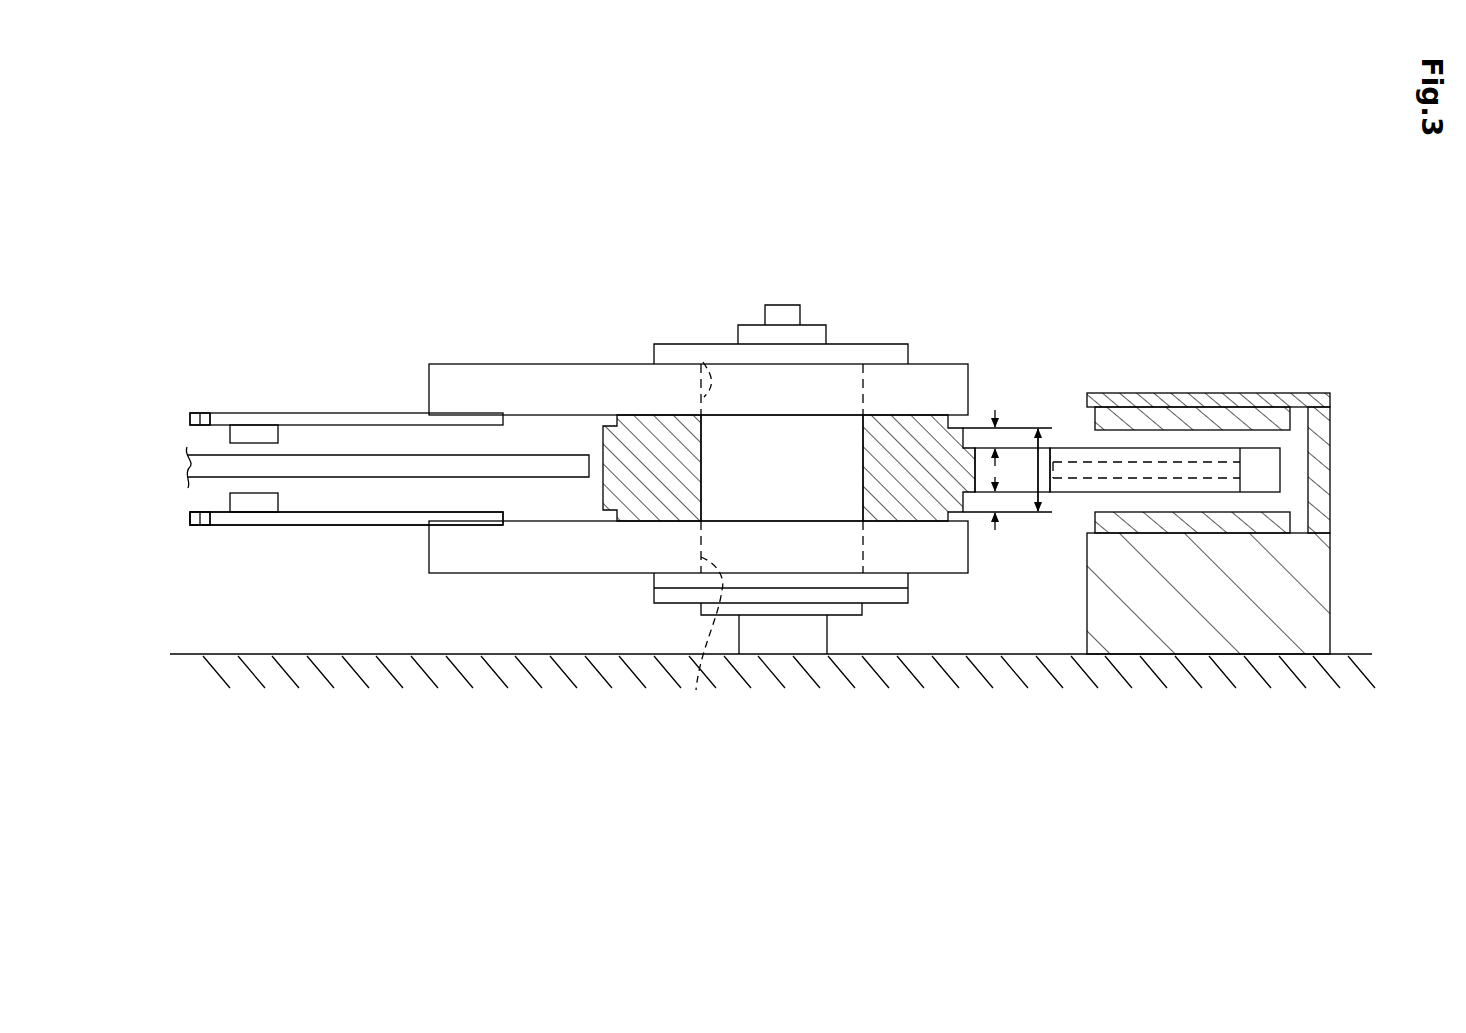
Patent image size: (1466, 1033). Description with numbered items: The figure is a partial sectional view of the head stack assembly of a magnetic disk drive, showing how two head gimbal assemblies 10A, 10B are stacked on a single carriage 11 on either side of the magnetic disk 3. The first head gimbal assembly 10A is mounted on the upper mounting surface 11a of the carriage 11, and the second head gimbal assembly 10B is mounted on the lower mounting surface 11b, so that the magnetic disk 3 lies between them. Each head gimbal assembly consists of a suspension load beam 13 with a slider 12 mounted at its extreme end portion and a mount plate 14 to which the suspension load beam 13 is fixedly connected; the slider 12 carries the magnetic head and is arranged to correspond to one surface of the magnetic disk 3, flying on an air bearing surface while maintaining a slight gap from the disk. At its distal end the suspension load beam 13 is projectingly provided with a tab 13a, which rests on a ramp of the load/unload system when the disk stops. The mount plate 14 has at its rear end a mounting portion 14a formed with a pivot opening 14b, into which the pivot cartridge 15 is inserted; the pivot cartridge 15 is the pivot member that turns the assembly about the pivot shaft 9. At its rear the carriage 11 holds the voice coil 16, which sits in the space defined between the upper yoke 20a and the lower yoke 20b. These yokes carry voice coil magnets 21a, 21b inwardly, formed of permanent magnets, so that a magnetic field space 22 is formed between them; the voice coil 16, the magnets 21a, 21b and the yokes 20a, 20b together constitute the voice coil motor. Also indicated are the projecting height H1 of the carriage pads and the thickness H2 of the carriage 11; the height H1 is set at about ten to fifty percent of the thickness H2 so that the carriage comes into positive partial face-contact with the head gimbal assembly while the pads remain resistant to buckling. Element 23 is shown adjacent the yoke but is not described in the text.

The magnetic disk 3 is at (488, 468).
The pivot shaft 9 is at (813, 628).
The first head gimbal assembly 10A is at (317, 456).
The second head gimbal assembly 10B is at (396, 545).
The carriage 11 is at (1020, 480).
The upper mounting surface 11a is at (905, 407).
The lower mounting surface 11b is at (917, 527).
The slider 12 is at (260, 438).
The suspension load beam 13 is at (325, 412).
The tab 13a is at (197, 412).
The mount plate 14 is at (513, 392).
The mounting portion 14a is at (624, 422).
The pivot opening 14b is at (703, 362).
The pivot cartridge 15 is at (806, 462).
The voice coil 16 is at (1128, 460).
The upper yoke 20a is at (1150, 398).
The lower yoke 20b is at (1275, 597).
The voice coil magnet 21a is at (1232, 423).
The voice coil magnet 21b is at (1270, 522).
The magnetic field space 22 is at (1262, 442).
The side yoke 23 is at (1288, 468).
The projecting height of the pad H1 is at (996, 410).
The thickness of the carriage H2 is at (1037, 427).